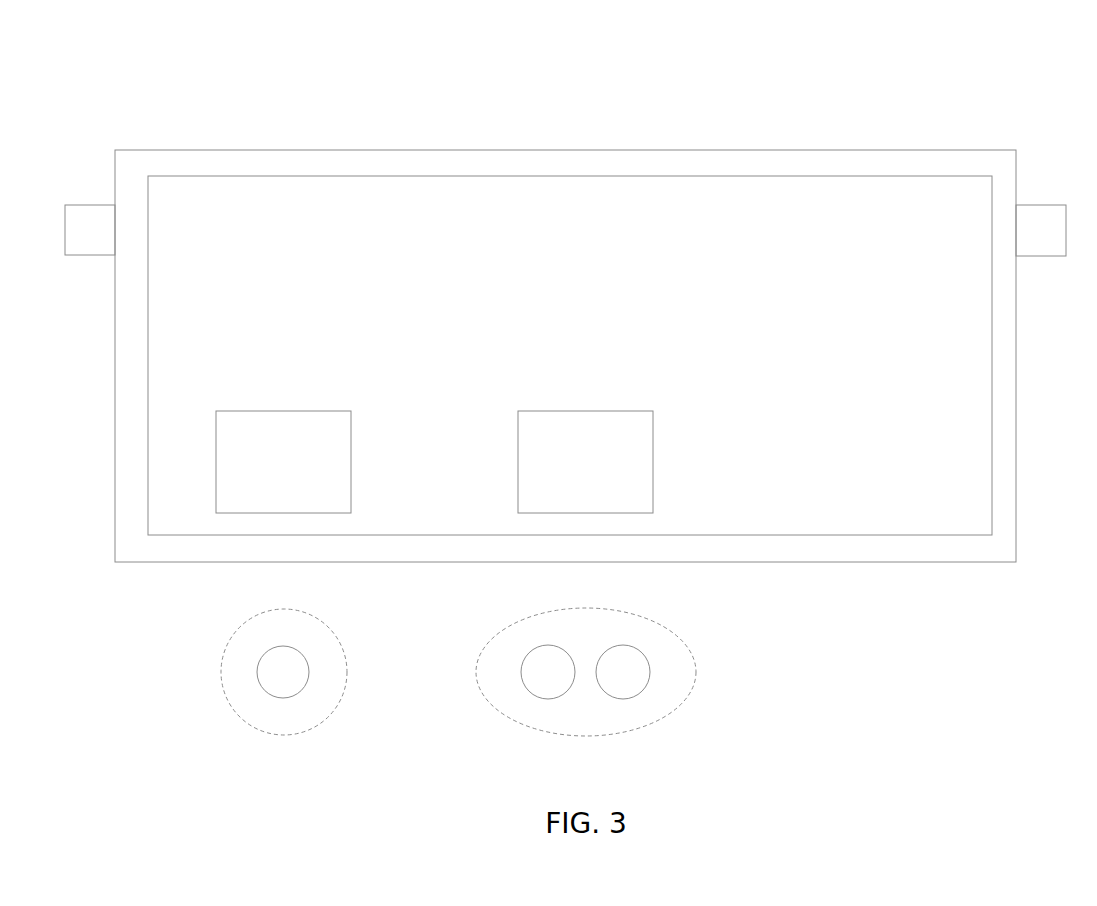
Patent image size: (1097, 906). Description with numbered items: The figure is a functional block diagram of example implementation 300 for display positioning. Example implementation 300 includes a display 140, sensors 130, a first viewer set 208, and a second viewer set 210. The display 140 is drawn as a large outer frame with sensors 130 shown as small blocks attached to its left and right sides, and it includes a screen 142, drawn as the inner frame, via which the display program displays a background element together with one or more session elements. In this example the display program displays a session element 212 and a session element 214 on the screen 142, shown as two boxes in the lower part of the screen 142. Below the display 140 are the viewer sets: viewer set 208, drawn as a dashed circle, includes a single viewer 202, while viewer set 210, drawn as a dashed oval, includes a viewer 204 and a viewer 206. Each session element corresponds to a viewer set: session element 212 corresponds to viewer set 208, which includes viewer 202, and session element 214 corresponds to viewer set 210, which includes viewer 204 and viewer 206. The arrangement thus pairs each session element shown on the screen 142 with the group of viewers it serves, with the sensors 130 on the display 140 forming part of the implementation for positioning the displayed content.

The example implementation 300 is at (938, 84).
The display 140 is at (213, 149).
The screen 142 is at (350, 175).
The sensors 130 is at (70, 205).
The session element 212 is at (265, 439).
The session element 214 is at (567, 439).
The viewer 202 is at (265, 681).
The viewer 204 is at (530, 681).
The viewer 206 is at (605, 681).
The viewer set 208 is at (320, 723).
The viewer set 210 is at (672, 713).